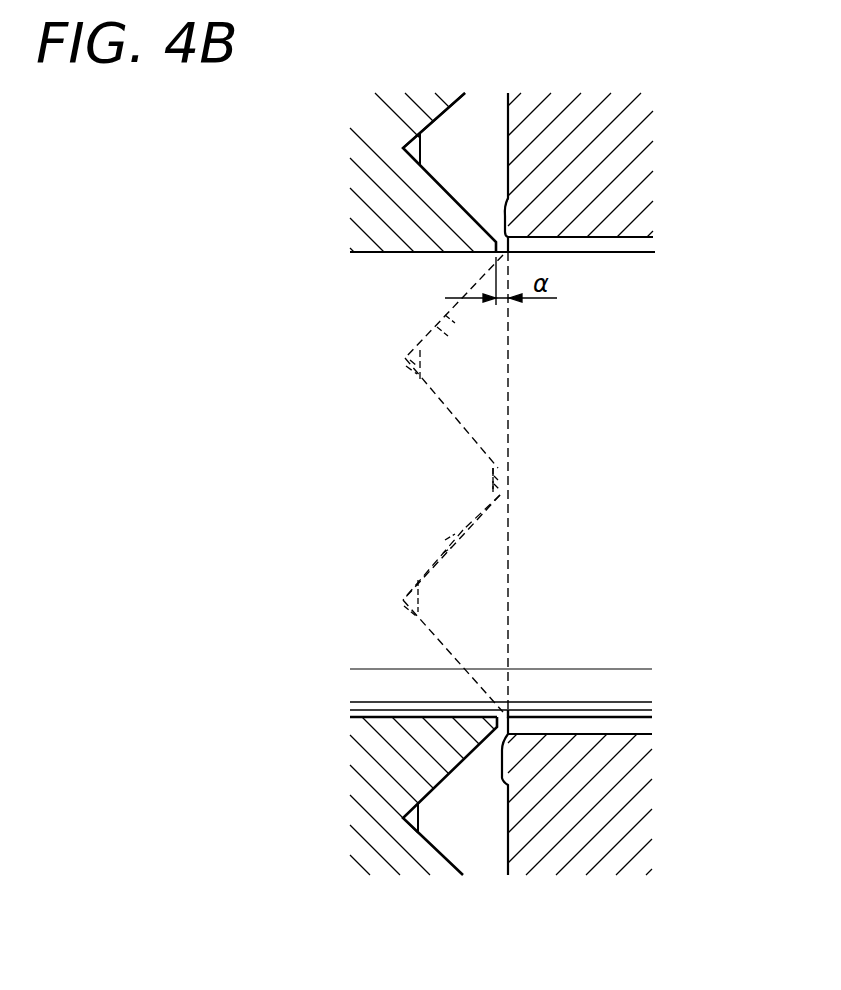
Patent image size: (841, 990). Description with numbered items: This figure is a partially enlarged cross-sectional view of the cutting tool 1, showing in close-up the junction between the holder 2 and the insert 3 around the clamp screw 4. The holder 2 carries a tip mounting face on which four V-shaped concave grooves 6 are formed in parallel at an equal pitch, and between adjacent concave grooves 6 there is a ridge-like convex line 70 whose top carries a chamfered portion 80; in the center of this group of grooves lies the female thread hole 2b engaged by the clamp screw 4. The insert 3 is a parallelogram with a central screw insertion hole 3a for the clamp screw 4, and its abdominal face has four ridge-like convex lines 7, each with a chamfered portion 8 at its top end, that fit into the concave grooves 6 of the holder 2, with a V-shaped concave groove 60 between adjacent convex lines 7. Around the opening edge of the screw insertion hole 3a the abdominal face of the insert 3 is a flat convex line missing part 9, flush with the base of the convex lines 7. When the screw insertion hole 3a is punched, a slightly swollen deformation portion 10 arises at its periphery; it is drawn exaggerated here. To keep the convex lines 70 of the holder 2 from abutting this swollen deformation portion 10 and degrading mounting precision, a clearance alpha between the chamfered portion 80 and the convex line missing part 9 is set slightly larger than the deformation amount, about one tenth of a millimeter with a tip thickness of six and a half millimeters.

The cutting tool 1 is at (290, 136).
The holder 2 is at (352, 228).
The female thread hole 2b is at (378, 254).
The insert 3 is at (658, 150).
The screw insertion hole 3a is at (647, 243).
The clamp screw 4 is at (388, 474).
The concave grooves 6 is at (462, 100).
The convex lines 7 is at (490, 120).
The chamfered portion 8 is at (402, 140).
The convex line missing part 9 is at (507, 108).
The swollen deformation portion 10 is at (505, 200).
The concave groove 60 is at (463, 530).
The convex line 70 is at (445, 518).
The chamfered portion 80 is at (507, 482).